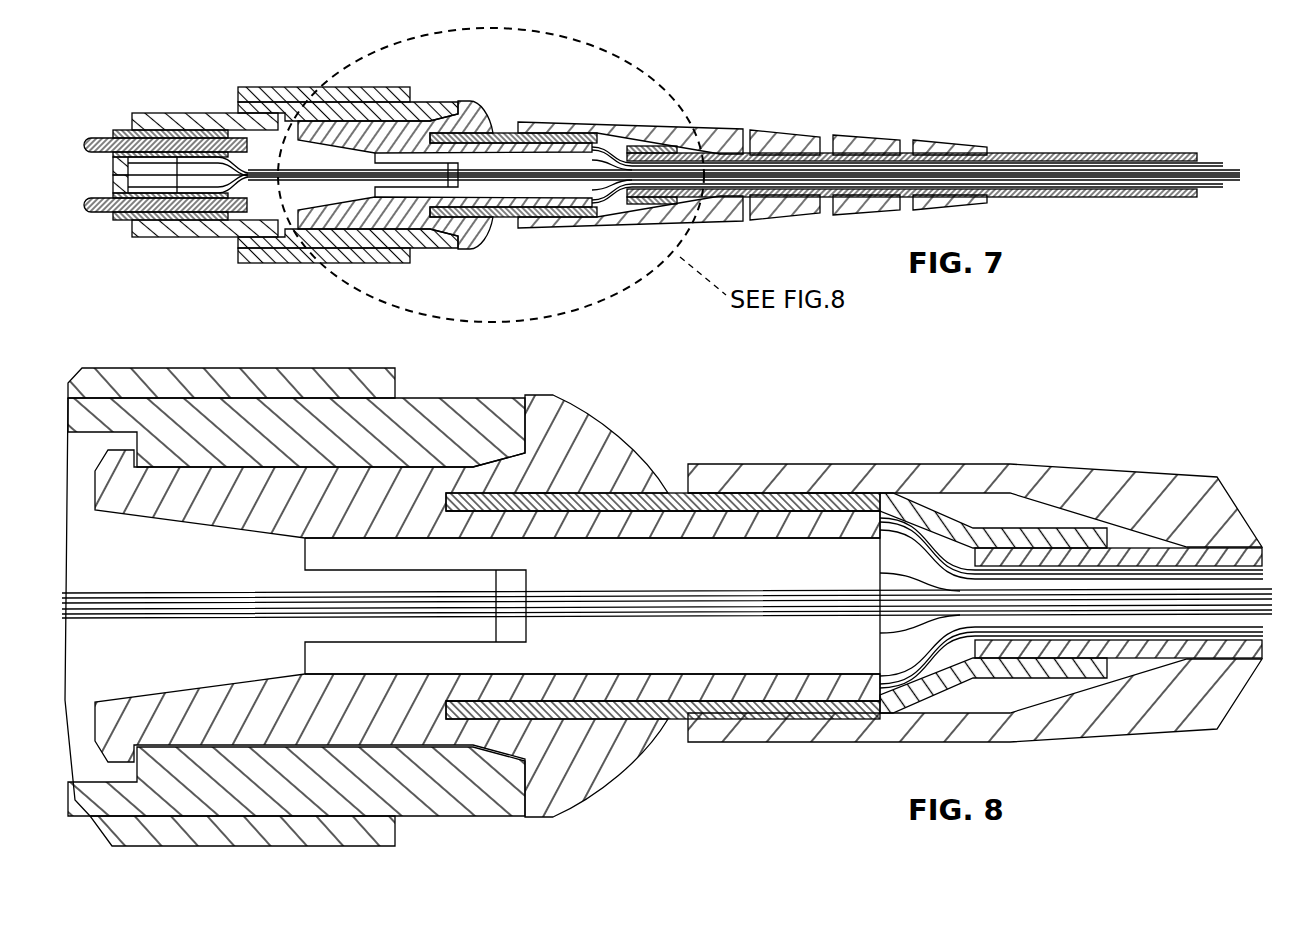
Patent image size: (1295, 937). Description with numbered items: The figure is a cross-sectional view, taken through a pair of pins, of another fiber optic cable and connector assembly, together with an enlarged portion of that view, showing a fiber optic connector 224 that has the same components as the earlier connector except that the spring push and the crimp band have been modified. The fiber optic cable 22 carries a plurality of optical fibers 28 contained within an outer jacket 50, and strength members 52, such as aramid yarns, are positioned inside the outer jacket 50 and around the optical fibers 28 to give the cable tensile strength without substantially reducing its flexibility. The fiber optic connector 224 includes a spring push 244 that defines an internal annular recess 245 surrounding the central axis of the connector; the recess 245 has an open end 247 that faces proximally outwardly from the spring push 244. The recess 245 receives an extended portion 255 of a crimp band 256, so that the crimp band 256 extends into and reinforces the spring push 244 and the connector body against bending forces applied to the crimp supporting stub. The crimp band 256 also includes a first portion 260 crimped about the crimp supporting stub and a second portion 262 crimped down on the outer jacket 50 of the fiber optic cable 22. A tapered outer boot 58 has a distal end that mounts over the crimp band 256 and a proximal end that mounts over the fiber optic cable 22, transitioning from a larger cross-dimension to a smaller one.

In FIG. 7, the fiber optic cable 22 is at (1043, 152).
In FIG. 8, the optical fibers 28 is at (641, 592).
In FIG. 8, the outer jacket 50 is at (1123, 547).
In FIG. 8, the strength members 52 is at (786, 516).
In FIG. 7, the outer boot 58 is at (788, 133).
In FIG. 7, the fiber optic connector 224 is at (452, 88).
In FIG. 8, the fiber optic connector 224 is at (427, 380).
In FIG. 7, the spring push 244 is at (492, 96).
In FIG. 8, the spring push 244 is at (605, 406).
In FIG. 7, the internal annular recess 245 is at (495, 134).
In FIG. 8, the internal annular recess 245 is at (589, 491).
In FIG. 8, the open end 247 is at (673, 492).
In FIG. 8, the extended portion 255 is at (538, 495).
In FIG. 7, the crimp band 256 is at (617, 141).
In FIG. 8, the crimp band 256 is at (745, 484).
In FIG. 8, the first portion 260 is at (835, 490).
In FIG. 8, the second portion 262 is at (1011, 528).